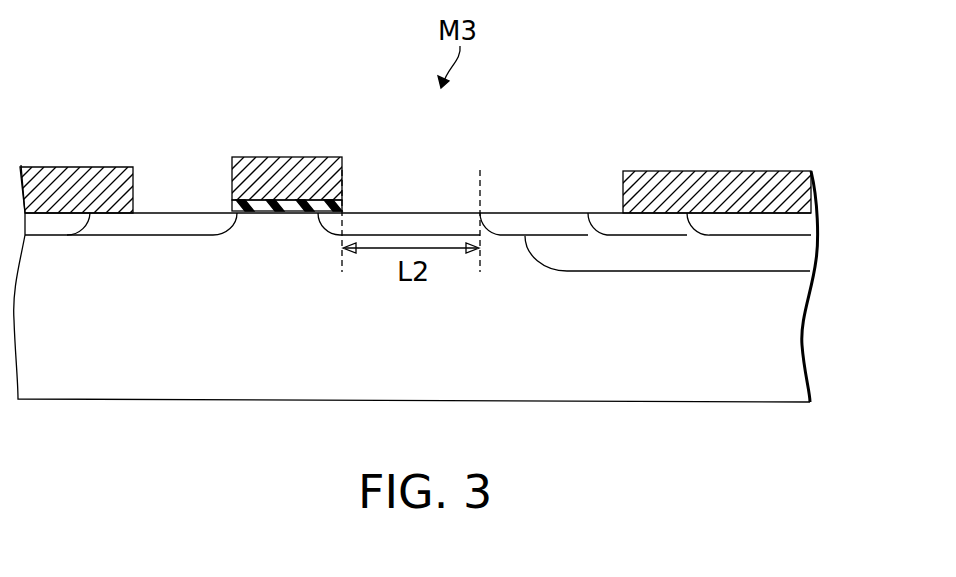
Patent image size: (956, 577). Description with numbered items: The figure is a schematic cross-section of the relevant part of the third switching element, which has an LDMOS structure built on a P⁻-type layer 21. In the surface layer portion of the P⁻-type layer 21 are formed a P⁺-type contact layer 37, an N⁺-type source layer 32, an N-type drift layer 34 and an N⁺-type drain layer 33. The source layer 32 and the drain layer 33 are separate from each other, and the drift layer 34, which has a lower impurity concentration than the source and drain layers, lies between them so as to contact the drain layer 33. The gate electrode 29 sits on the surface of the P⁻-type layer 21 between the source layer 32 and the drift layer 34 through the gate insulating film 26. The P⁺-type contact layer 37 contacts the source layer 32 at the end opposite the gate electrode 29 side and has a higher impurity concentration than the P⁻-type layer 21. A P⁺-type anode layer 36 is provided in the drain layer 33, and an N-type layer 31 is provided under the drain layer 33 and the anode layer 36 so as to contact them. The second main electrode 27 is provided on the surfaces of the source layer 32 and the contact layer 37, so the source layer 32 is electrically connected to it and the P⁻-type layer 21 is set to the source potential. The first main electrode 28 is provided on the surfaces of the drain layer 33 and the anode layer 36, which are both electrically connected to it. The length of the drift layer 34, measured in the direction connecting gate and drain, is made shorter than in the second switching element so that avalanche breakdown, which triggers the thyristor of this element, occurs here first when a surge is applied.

The P⁻-type layer 21 is at (766, 349).
The gate insulating film 26 is at (243, 207).
The second main electrode 27 is at (108, 173).
The first main electrode 28 is at (770, 185).
The gate electrode 29 is at (283, 170).
The N-type layer 31 is at (766, 259).
The N⁺-type source layer 32 is at (200, 227).
The N⁺-type drain layer 33 is at (508, 223).
The N-type drift layer 34 is at (373, 223).
The P⁺-type anode layer 36 is at (603, 223).
The P⁺-type contact layer 37 is at (37, 217).